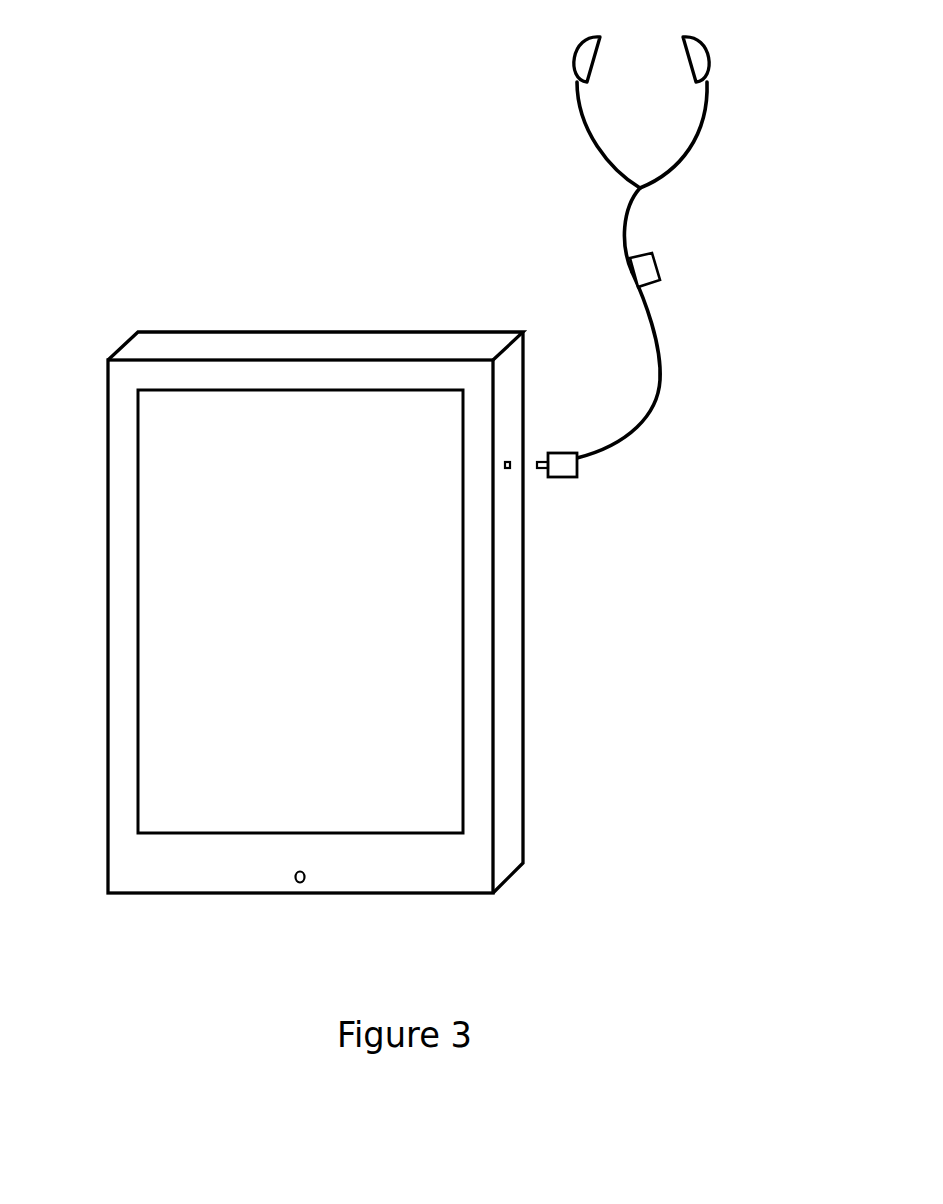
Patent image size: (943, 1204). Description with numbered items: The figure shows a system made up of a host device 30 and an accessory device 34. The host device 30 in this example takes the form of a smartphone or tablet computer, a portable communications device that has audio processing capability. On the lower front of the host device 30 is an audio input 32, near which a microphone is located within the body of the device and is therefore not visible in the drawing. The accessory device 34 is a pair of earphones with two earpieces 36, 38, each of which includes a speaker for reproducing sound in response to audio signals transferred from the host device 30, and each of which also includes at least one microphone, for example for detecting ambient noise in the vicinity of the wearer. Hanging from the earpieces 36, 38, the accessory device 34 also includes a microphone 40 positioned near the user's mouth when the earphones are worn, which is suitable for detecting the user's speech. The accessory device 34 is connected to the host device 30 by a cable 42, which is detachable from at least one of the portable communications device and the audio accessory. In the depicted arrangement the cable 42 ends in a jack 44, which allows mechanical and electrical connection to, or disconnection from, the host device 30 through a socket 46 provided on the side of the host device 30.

The host device 30 is at (143, 327).
The audio input 32 is at (298, 884).
The accessory device 34 is at (702, 122).
The earpiece 36 is at (571, 58).
The earpiece 38 is at (711, 52).
The microphone 40 is at (658, 266).
The cable 42 is at (653, 408).
The jack 44 is at (563, 478).
The socket 46 is at (512, 460).